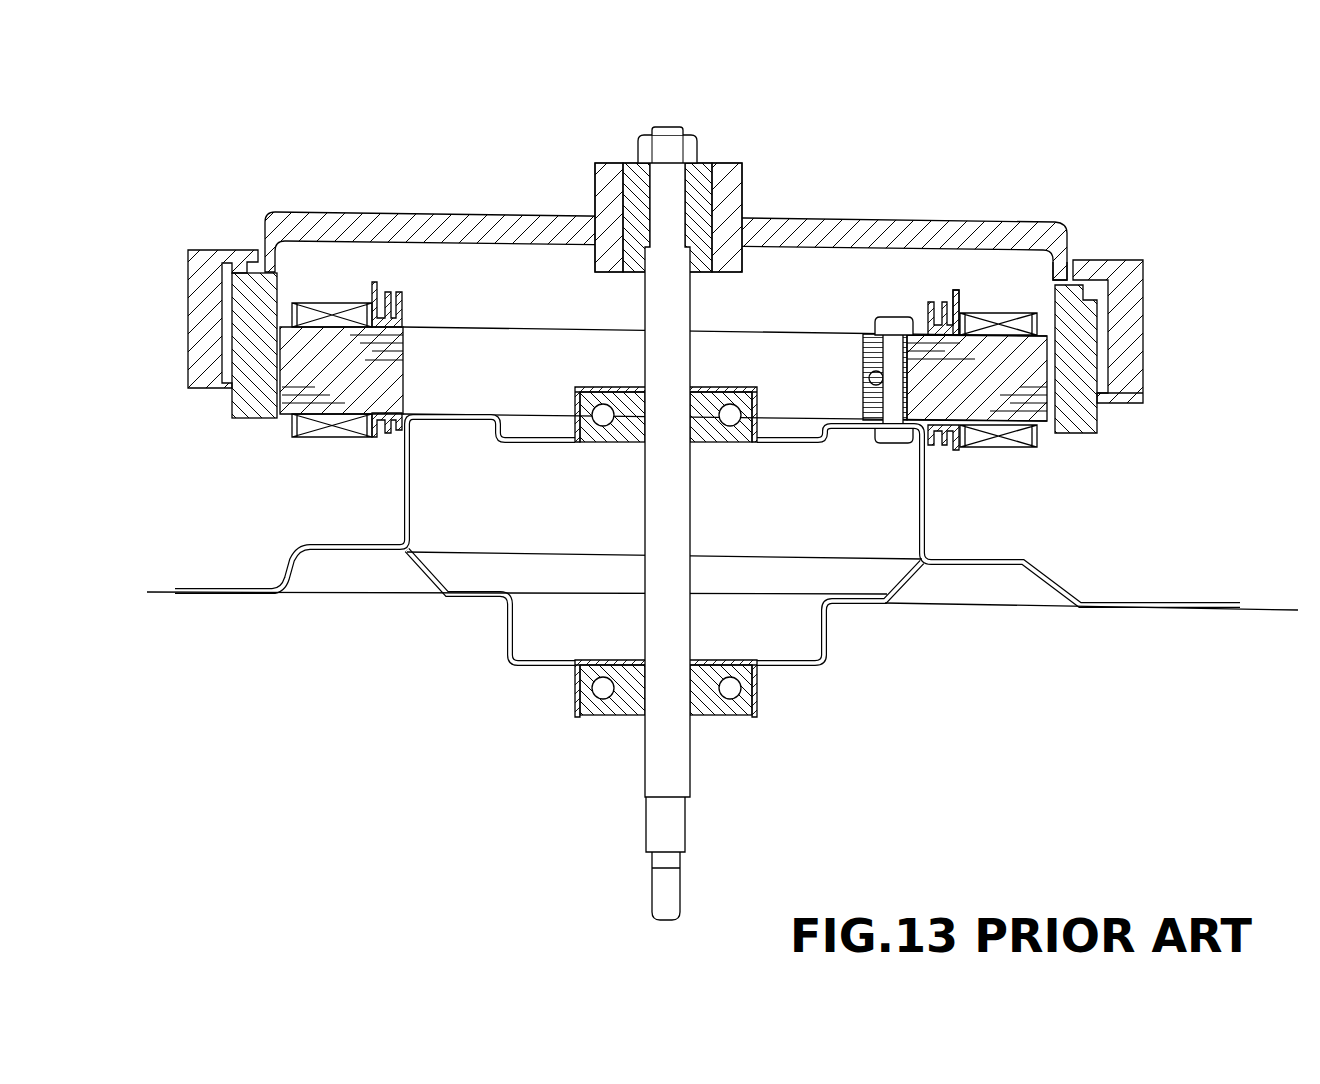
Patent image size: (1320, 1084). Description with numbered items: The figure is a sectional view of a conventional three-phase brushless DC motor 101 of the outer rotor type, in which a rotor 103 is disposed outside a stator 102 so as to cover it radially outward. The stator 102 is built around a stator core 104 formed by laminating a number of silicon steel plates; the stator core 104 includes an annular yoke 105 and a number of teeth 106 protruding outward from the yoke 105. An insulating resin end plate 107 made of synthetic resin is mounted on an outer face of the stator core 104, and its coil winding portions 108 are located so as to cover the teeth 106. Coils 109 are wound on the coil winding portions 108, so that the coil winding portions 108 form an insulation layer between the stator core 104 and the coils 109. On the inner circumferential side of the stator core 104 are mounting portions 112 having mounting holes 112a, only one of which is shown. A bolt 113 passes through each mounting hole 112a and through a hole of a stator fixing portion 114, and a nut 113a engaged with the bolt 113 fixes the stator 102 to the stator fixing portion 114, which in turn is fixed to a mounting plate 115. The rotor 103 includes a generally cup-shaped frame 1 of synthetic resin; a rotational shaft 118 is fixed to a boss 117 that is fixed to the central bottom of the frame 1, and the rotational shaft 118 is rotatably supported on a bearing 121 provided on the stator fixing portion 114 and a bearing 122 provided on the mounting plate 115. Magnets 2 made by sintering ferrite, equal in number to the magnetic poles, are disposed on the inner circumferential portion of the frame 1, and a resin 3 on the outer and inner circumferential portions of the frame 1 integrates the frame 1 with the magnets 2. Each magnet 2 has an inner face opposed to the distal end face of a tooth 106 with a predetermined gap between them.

The frame 1 is at (928, 220).
The magnets 2 is at (255, 422).
The resin 3 is at (1110, 260).
The motor 101 is at (1074, 206).
The stator 102 is at (1049, 460).
The rotor 103 is at (1158, 268).
The stator core 104 is at (982, 447).
The yoke 105 is at (403, 357).
The teeth 106 is at (285, 420).
The insulating resin end plate 107 is at (957, 288).
The coil winding portions 108 is at (352, 320).
The coils 109 is at (313, 320).
The mounting portions 112 is at (864, 357).
The mounting holes 112a is at (870, 378).
The bolt 113 is at (890, 314).
The nut 113a is at (890, 445).
The stator fixing portion 114 is at (920, 484).
The mounting plate 115 is at (869, 603).
The boss 117 is at (703, 164).
The rotational shaft 118 is at (686, 304).
The bearing 121 is at (602, 447).
The bearing 122 is at (602, 720).